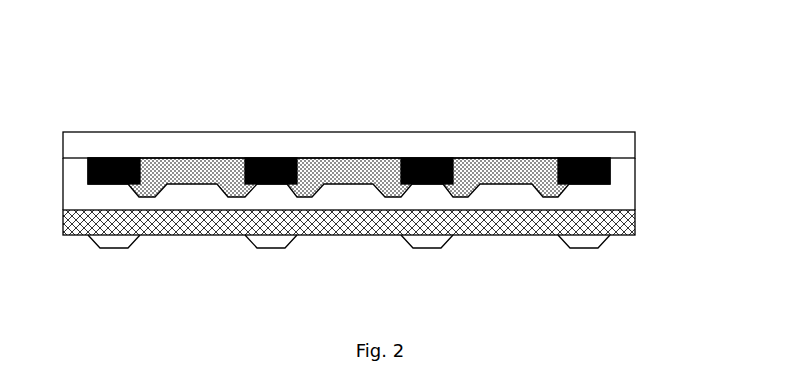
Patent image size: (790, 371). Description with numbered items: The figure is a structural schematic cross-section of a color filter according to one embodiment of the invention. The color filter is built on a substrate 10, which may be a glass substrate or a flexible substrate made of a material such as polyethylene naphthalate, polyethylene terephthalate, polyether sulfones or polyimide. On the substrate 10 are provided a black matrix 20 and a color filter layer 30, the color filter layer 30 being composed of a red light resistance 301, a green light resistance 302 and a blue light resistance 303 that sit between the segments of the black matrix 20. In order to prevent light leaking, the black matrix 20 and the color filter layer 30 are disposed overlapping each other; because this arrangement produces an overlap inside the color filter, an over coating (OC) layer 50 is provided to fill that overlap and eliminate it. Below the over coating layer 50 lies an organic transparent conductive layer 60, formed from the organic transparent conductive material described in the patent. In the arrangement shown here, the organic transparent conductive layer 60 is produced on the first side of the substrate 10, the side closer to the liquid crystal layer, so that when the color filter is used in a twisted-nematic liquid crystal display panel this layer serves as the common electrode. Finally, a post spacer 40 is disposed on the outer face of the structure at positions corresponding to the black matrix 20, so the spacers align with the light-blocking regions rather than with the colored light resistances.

The substrate 10 is at (635, 145).
The black matrix 20 is at (387, 126).
The color filter layer 30 is at (349, 126).
The red light resistance 301 is at (192, 175).
The green light resistance 302 is at (348, 175).
The blue light resistance 303 is at (505, 139).
The post spacer 40 is at (425, 243).
The over coating (OC) layer 50 is at (635, 196).
The organic transparent conductive layer 60 is at (635, 224).